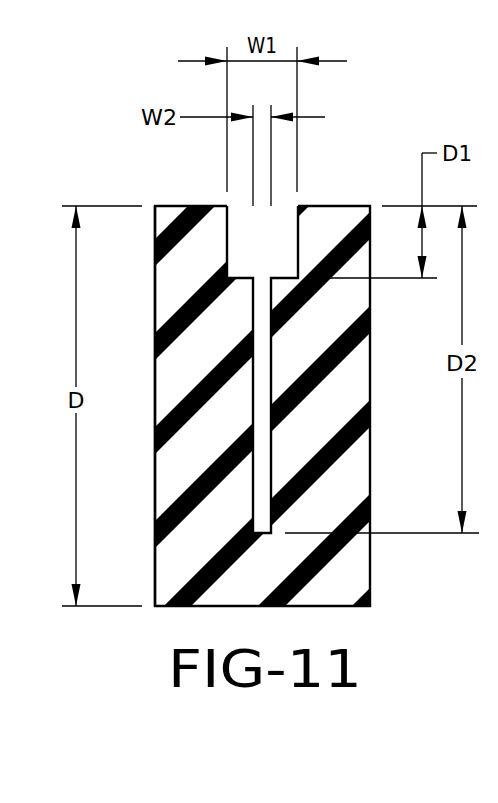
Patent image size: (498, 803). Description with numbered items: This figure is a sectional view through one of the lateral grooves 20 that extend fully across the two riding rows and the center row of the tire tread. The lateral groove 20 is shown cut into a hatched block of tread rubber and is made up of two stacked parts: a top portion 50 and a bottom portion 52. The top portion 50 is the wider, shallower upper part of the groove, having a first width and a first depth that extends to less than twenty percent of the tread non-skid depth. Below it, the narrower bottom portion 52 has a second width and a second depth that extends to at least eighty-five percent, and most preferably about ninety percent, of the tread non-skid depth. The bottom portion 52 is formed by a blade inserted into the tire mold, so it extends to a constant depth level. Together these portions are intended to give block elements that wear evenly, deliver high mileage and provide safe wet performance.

The lateral groove 20 is at (215, 187).
The top portion 50 is at (147, 243).
The bottom portion 52 is at (147, 400).